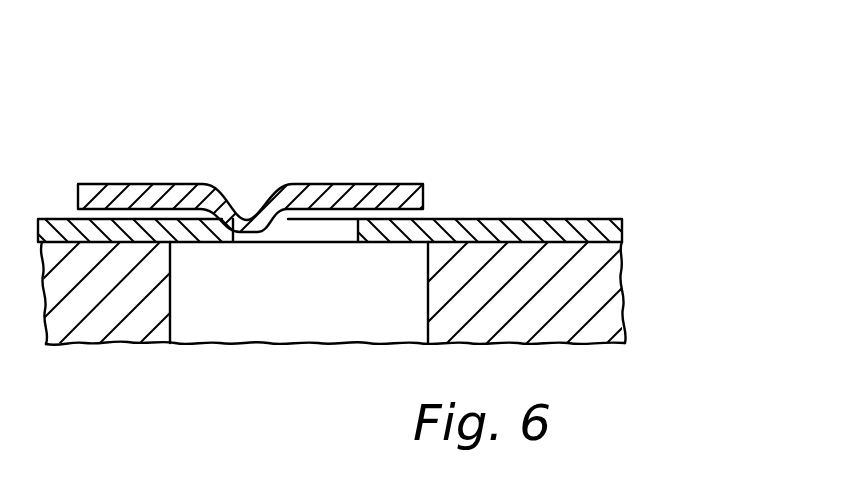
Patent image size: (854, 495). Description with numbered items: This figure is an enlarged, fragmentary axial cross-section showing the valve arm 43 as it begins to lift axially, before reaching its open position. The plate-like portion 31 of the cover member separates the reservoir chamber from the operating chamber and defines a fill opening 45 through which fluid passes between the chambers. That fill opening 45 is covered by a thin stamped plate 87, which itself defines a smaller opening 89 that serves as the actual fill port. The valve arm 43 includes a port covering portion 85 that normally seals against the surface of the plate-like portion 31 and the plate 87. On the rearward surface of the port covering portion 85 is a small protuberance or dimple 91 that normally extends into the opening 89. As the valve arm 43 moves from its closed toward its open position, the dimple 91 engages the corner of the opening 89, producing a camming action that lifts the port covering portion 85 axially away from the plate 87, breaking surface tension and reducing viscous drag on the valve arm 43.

The plate-like portion 31 is at (102, 318).
The valve arm 43 is at (253, 175).
The fill opening 45 is at (170, 298).
The port covering portion 85 is at (347, 188).
The stamped plate 87 is at (497, 230).
The opening 89 is at (354, 231).
The dimple 91 is at (271, 232).